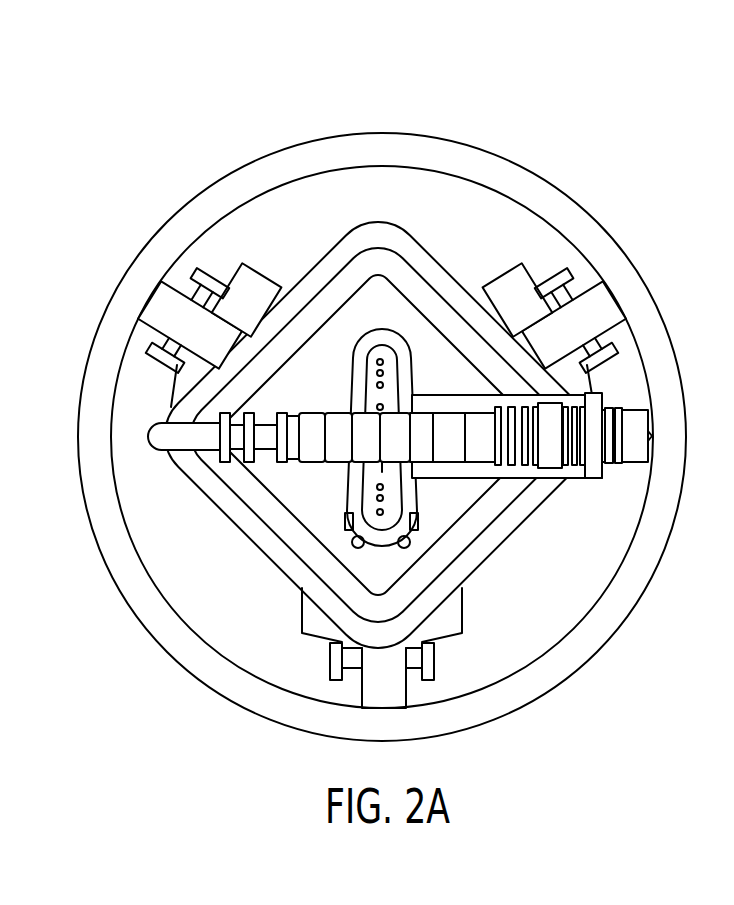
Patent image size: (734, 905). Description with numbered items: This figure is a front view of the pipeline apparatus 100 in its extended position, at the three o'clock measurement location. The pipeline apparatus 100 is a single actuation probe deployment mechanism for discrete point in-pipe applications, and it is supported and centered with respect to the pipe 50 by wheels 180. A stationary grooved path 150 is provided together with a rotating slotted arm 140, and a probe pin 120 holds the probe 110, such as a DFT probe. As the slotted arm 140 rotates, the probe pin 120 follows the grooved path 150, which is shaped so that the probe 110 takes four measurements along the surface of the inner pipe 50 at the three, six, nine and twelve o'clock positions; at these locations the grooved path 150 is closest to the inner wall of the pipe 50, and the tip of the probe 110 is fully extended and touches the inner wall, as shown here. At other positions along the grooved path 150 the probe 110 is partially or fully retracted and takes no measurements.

The pipeline apparatus 100 is at (364, 44).
The pipe 50 is at (182, 647).
The probe 110 is at (633, 455).
The probe pin 120 is at (548, 455).
The rotating slotted arm 140 is at (413, 425).
The stationary grooved path 150 is at (330, 302).
The wheels 180 is at (377, 683).